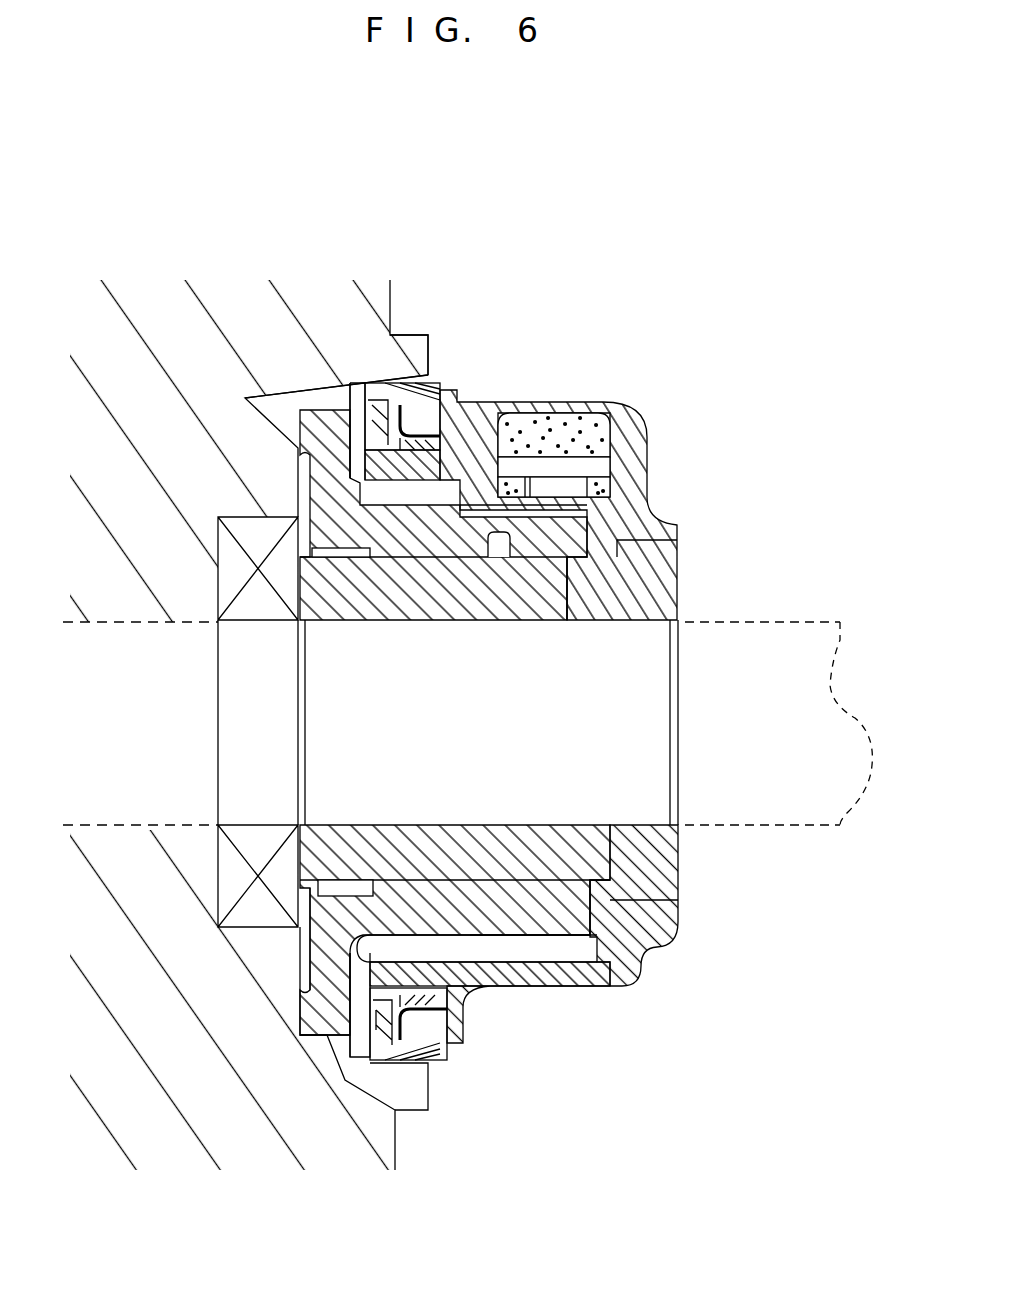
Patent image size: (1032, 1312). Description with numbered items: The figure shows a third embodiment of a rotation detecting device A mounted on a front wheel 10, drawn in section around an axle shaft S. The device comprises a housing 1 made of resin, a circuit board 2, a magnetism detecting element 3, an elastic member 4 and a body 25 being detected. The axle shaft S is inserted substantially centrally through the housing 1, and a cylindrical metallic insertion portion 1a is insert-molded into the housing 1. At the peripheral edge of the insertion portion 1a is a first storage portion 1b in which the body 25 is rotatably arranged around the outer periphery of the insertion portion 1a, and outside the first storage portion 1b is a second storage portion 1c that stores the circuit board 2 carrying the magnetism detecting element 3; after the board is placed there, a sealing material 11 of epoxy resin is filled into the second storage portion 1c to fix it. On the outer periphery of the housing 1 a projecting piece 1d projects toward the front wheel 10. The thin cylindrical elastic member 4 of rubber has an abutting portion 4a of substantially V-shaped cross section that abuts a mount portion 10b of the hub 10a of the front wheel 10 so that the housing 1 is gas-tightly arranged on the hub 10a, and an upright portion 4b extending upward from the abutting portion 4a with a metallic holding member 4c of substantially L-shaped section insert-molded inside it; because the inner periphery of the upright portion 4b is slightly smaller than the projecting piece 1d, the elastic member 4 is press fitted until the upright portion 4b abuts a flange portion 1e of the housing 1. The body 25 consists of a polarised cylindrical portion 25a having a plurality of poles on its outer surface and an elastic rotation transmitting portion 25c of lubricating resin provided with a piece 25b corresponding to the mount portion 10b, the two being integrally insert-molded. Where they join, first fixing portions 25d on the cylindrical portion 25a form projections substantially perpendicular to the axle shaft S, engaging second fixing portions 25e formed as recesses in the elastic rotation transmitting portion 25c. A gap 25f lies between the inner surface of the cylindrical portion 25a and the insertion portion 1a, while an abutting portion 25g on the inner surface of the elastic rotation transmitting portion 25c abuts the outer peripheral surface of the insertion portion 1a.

The housing 1 is at (663, 503).
The insertion portion 1a is at (668, 552).
The first storage portion 1b is at (540, 950).
The second storage portion 1c is at (602, 432).
The projecting piece 1d is at (375, 500).
The flange portion 1e is at (434, 462).
The circuit board 2 is at (600, 465).
The magnetism detecting element 3 is at (567, 487).
The elastic member 4 is at (413, 404).
The abutting portion 4a is at (398, 1063).
The upright portion 4b is at (450, 1012).
The holding member 4c is at (430, 1040).
The front wheel 10 is at (243, 270).
The hub 10a is at (395, 335).
The mount portion 10b is at (245, 398).
The sealing material 11 is at (575, 425).
The body being detected 25 is at (425, 497).
The cylindrical portion 25a is at (568, 560).
The piece 25b is at (345, 1080).
The elastic rotation transmitting portion 25c is at (337, 882).
The first fixing portions 25d is at (487, 545).
The second fixing portions 25e is at (478, 538).
The gap 25f is at (530, 882).
The abutting portion 25g is at (412, 882).
The axle shaft S is at (818, 672).
The rotation detecting device A is at (742, 520).